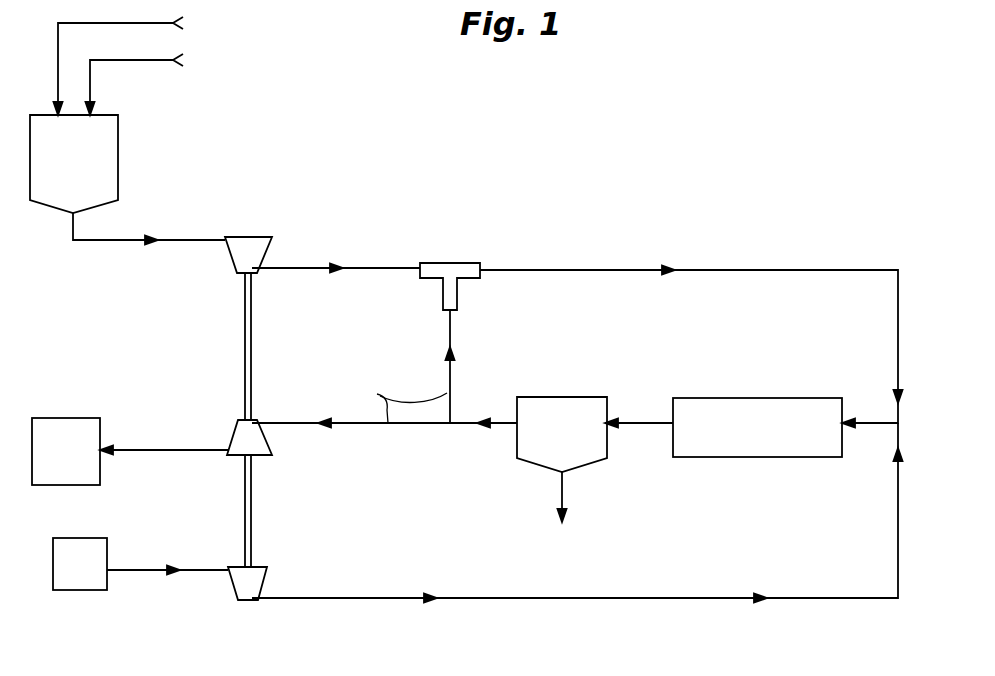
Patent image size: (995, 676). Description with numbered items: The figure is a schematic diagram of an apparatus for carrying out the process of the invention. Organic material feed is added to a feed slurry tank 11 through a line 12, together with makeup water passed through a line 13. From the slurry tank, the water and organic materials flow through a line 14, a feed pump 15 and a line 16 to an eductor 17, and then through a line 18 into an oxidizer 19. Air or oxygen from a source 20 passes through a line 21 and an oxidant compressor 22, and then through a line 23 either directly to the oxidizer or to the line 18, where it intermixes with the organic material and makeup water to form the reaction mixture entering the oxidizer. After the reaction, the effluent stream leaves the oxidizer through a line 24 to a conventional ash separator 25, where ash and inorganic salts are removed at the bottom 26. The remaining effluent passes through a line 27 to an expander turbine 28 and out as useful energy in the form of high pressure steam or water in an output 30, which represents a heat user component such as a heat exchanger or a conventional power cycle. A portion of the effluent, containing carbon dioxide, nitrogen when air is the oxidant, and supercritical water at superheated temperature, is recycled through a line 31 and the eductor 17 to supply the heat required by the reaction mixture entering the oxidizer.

The feed slurry tank 11 is at (118, 133).
The line 12 is at (58, 48).
The line 13 is at (113, 61).
The line 14 is at (193, 240).
The feed pump 15 is at (263, 249).
The line 16 is at (369, 266).
The eductor 17 is at (483, 260).
The line 18 is at (818, 270).
The oxidizer 19 is at (783, 398).
The source 20 is at (94, 578).
The line 21 is at (200, 573).
The oxidant compressor 22 is at (265, 582).
The line 23 is at (898, 552).
The line 24 is at (660, 425).
The ash separator 25 is at (605, 397).
The bottom 26 is at (572, 563).
The line 27 is at (465, 425).
The expander turbine 28 is at (265, 435).
The output 30 is at (72, 459).
The line 31 is at (448, 333).